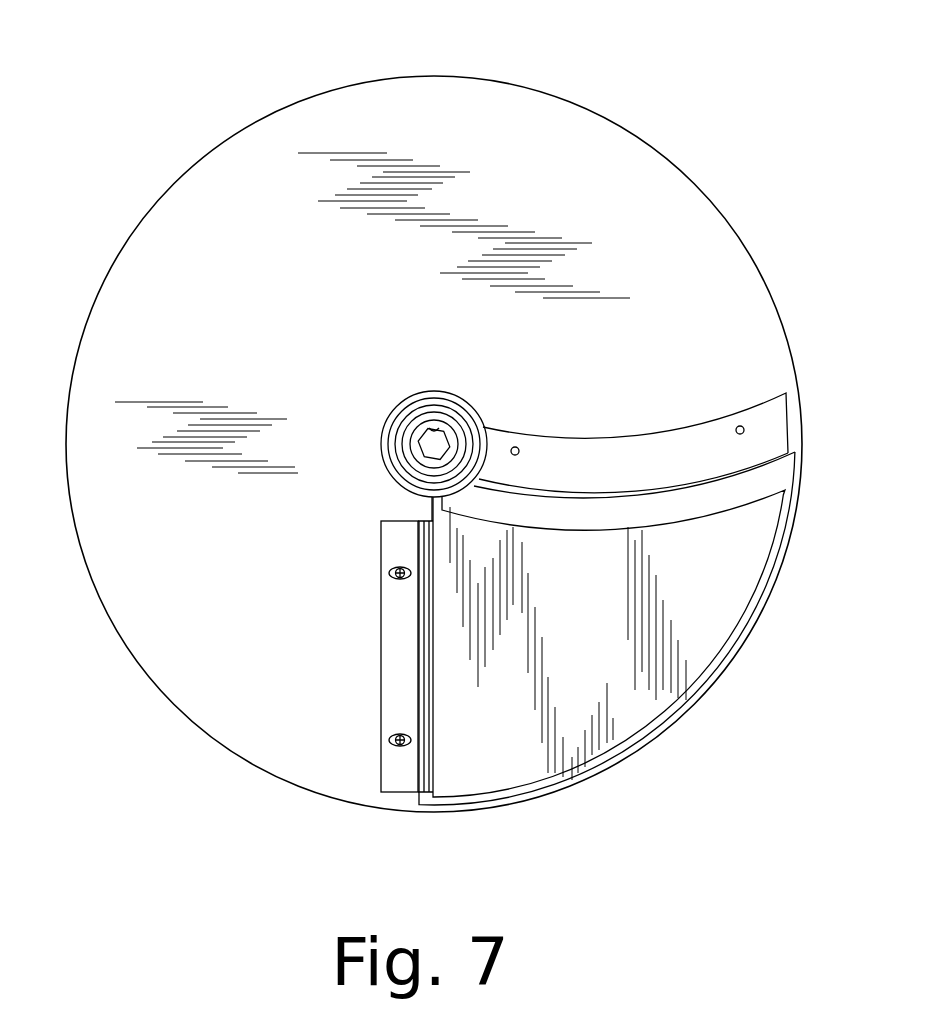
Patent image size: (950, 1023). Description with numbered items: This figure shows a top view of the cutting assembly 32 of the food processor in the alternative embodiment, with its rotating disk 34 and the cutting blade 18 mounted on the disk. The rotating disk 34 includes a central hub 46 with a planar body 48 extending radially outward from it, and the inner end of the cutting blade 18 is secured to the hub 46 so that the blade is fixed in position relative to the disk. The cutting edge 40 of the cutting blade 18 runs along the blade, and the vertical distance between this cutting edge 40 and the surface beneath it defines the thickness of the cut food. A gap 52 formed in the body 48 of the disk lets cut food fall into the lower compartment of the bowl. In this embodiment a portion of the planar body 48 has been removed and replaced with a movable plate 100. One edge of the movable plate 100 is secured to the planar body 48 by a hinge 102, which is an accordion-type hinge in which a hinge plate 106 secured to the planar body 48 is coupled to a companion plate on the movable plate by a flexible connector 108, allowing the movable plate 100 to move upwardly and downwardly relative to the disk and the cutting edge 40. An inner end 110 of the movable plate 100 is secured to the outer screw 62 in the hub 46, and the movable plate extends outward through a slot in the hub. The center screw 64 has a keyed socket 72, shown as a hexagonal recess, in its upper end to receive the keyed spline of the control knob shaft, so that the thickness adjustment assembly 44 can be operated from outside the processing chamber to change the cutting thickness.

The cutting assembly 32 is at (697, 106).
The rotating disk 34 is at (743, 305).
The planar body 48 is at (123, 428).
The thickness adjustment assembly 44 is at (479, 395).
The central hub 46 is at (392, 443).
The outer screw 62 is at (407, 431).
The center screw 64 is at (423, 425).
The keyed socket 72 is at (440, 427).
The cutting blade 18 is at (602, 447).
The cutting edge 40 is at (672, 495).
The gap 52 is at (768, 471).
The movable plate 100 is at (675, 681).
The inner end 110 is at (433, 500).
The hinge 102 is at (398, 679).
The flexible connector 108 is at (425, 617).
The hinge plate 106 is at (397, 588).